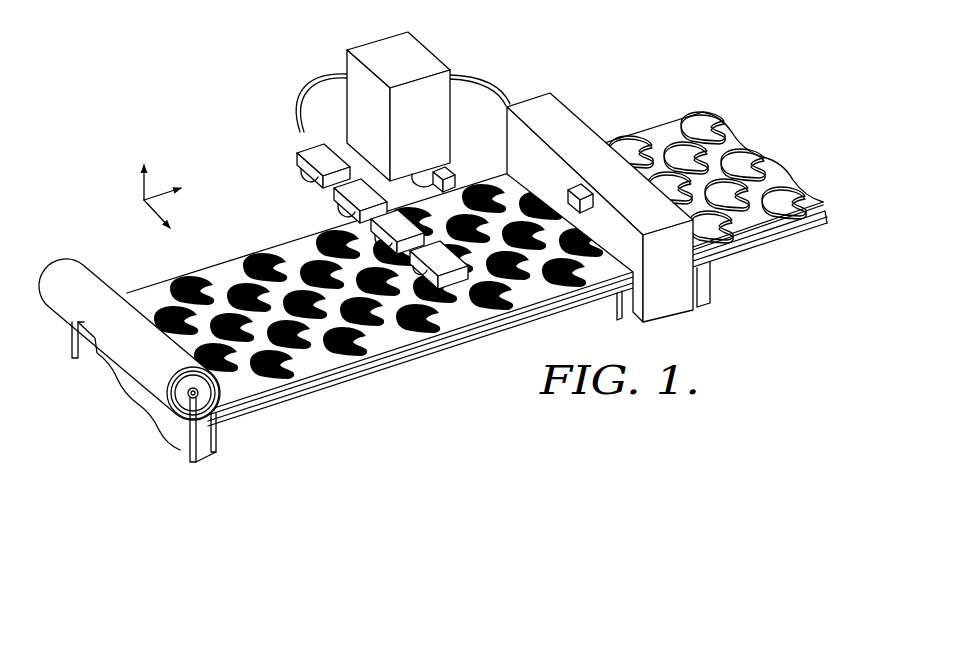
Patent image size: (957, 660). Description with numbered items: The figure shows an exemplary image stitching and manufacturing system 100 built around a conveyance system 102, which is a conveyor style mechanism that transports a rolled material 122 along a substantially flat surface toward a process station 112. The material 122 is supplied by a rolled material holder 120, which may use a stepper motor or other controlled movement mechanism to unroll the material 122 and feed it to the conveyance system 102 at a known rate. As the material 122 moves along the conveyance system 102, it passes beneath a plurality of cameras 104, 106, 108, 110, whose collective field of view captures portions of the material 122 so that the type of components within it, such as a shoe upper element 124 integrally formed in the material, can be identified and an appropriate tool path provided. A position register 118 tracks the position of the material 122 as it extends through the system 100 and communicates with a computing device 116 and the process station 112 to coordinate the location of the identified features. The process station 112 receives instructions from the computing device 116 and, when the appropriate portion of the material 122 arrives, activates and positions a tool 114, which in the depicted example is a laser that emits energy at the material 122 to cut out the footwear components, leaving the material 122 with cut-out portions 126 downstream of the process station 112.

The system 100 is at (177, 84).
The conveyance system 102 is at (323, 395).
The camera 104 is at (300, 148).
The camera 106 is at (362, 189).
The camera 108 is at (395, 222).
The camera 110 is at (465, 281).
The process station 112 is at (558, 117).
The tool 114 is at (579, 183).
The computing device 116 is at (400, 52).
The position register 118 is at (456, 173).
The rolled material holder 120 is at (186, 445).
The rolled material 122 is at (63, 276).
The shoe upper element 124 is at (262, 250).
The cut-out portions 126 is at (716, 128).